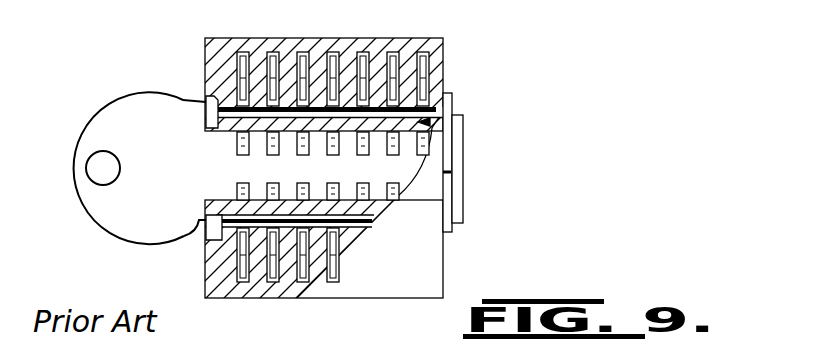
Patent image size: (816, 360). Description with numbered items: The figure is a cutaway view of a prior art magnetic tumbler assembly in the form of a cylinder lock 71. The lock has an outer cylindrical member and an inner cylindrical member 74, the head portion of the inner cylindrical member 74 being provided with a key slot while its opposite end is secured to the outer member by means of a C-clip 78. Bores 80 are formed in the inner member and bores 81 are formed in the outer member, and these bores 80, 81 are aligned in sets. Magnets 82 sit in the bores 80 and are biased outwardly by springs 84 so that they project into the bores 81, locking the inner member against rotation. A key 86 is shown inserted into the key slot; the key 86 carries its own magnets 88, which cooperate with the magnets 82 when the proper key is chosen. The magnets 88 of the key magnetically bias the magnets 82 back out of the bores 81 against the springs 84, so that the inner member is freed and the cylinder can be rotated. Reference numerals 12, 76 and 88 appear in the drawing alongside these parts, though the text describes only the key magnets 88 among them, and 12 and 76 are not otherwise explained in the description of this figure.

The lock housing 12 is at (348, 50).
The cylinder lock 71 is at (406, 283).
The inner cylindrical member 74 is at (228, 198).
The key stop 76 is at (212, 104).
The C-clip 78 is at (455, 98).
The bores 80 is at (437, 56).
The bores 81 is at (428, 122).
The magnets 82 is at (233, 97).
The springs 84 is at (240, 46).
The key 86 is at (153, 212).
The magnets 88 is at (234, 143).